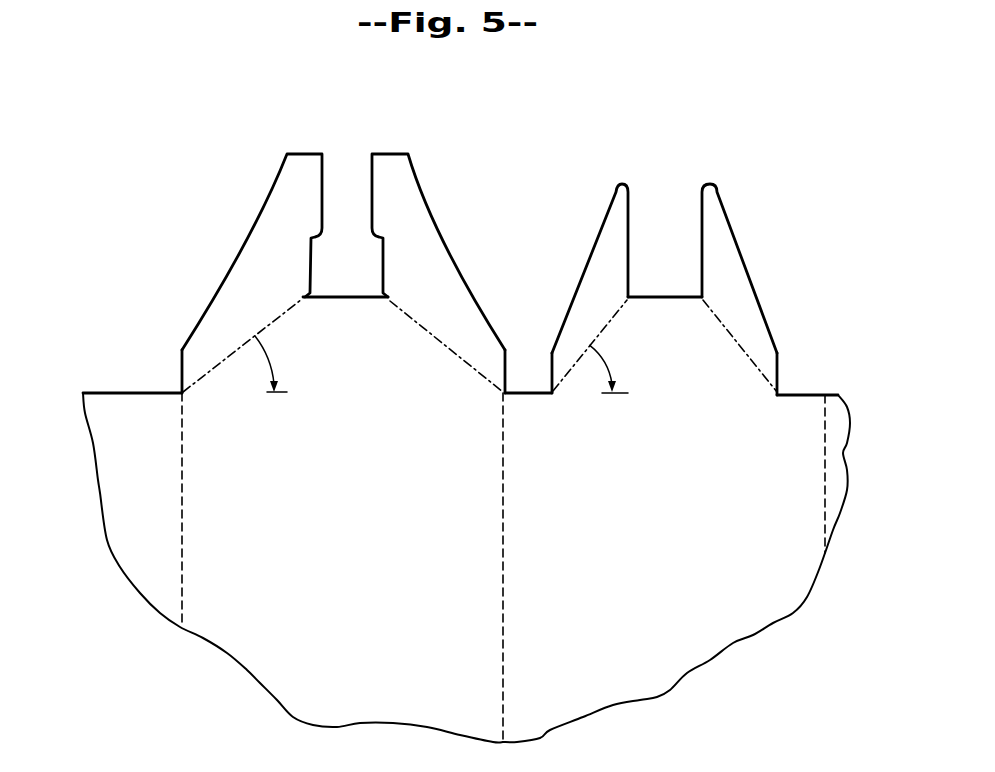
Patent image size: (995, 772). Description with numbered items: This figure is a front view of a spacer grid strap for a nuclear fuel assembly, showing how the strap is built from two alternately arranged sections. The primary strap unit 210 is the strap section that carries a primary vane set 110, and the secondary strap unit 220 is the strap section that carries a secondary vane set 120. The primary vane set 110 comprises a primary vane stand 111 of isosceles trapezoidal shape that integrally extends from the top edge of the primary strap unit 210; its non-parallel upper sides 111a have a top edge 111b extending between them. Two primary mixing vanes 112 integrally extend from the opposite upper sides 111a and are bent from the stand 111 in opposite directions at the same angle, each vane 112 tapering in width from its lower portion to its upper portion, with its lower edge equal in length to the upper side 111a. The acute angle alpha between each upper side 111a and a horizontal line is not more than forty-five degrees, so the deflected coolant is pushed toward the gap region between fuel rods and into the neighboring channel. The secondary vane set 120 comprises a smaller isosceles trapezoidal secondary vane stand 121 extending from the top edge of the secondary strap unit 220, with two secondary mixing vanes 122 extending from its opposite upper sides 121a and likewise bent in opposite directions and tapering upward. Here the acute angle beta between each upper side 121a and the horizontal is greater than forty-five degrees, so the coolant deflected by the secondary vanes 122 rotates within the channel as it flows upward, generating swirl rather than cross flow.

The primary vane set 110 is at (200, 262).
The primary vane stand 111 is at (311, 354).
The upper side of primary vane stand 111a is at (218, 367).
The top edge of primary vane stand 111b is at (350, 293).
The primary mixing vane 112 is at (267, 217).
The secondary vane set 120 is at (770, 259).
The secondary vane stand 121 is at (670, 300).
The upper side of secondary vane stand 121a is at (600, 333).
The secondary mixing vane 122 is at (616, 198).
The primary strap unit 210 is at (291, 637).
The secondary strap unit 220 is at (717, 612).